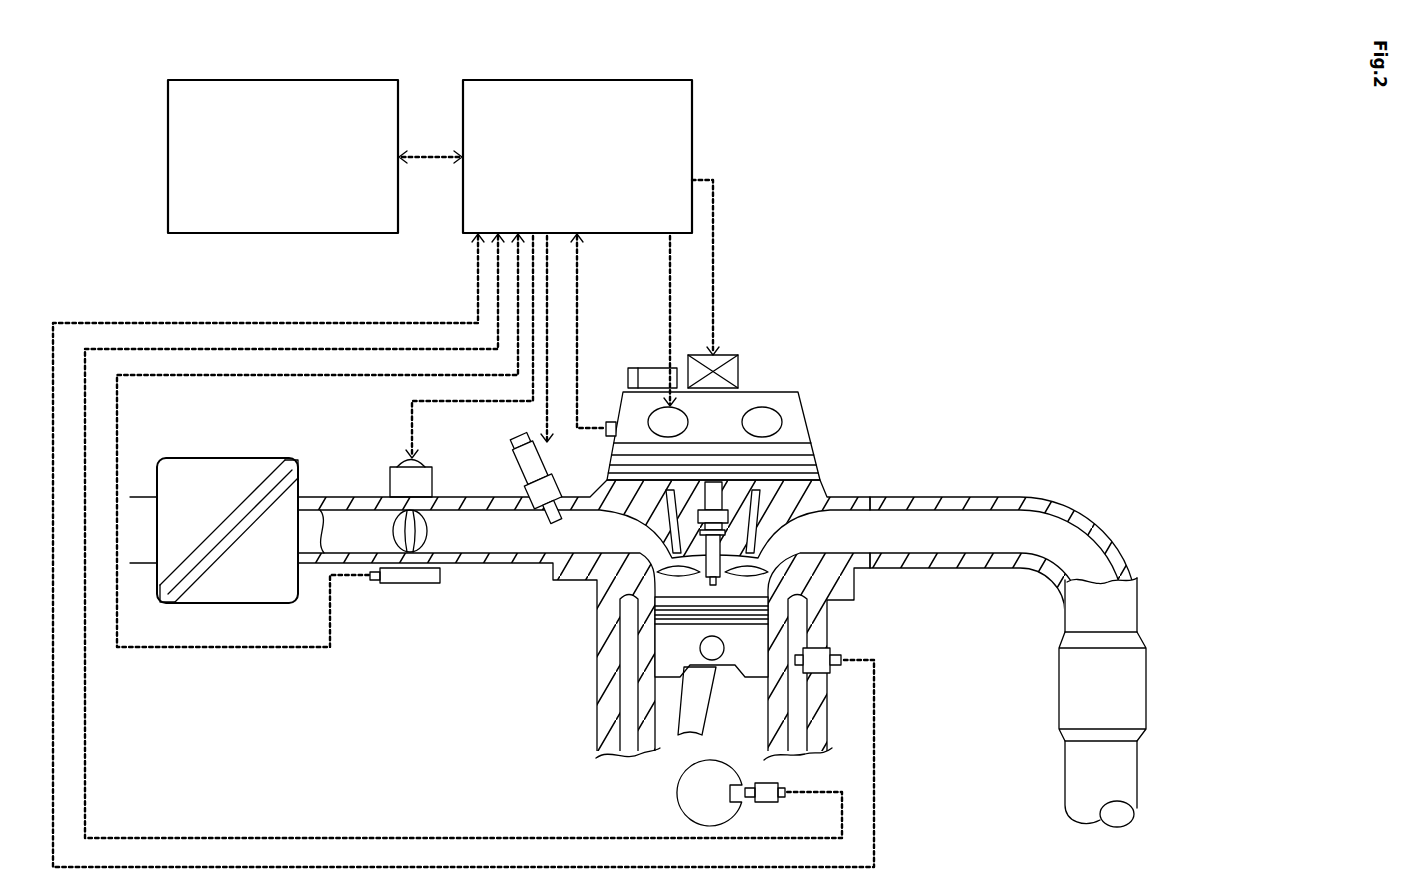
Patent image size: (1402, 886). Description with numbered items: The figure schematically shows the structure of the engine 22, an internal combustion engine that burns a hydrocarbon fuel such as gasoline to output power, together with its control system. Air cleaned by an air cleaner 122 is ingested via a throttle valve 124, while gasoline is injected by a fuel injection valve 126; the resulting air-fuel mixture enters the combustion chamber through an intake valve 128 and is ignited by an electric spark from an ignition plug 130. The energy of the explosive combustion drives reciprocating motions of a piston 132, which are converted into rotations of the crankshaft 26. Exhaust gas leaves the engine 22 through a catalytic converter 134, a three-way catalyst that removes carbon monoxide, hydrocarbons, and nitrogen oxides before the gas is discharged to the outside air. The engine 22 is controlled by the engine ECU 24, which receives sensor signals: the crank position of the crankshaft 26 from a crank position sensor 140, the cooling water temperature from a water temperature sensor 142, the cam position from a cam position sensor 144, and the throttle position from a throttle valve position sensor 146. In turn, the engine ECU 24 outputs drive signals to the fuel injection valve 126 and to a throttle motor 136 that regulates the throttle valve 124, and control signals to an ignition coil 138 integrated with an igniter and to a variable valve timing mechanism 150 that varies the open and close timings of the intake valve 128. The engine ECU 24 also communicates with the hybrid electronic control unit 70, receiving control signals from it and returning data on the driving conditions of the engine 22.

The hybrid electronic control unit 70 is at (286, 80).
The engine electronic control unit 24 is at (580, 80).
The engine 22 is at (762, 335).
The air cleaner 122 is at (228, 458).
The throttle valve 124 is at (430, 545).
The fuel injection valve 126 is at (518, 492).
The intake valve 128 is at (678, 558).
The ignition plug 130 is at (757, 568).
The piston 132 is at (680, 650).
The catalytic converter 134 is at (1072, 671).
The throttle motor 136 is at (388, 487).
The ignition coil 138 is at (740, 375).
The crank position sensor 140 is at (761, 802).
The water temperature sensor 142 is at (835, 648).
The cam position sensor 144 is at (608, 422).
The throttle valve position sensor 146 is at (422, 584).
The variable valve timing mechanism 150 is at (815, 425).
The crankshaft 26 is at (677, 793).